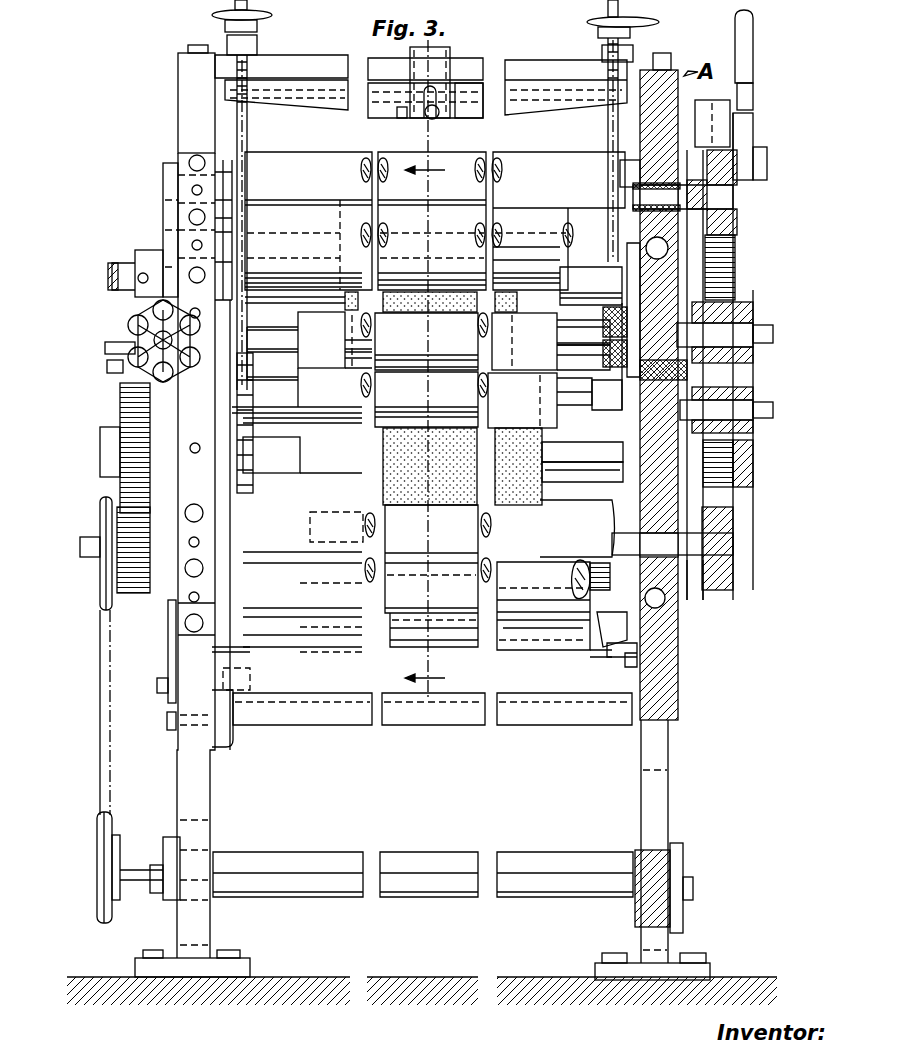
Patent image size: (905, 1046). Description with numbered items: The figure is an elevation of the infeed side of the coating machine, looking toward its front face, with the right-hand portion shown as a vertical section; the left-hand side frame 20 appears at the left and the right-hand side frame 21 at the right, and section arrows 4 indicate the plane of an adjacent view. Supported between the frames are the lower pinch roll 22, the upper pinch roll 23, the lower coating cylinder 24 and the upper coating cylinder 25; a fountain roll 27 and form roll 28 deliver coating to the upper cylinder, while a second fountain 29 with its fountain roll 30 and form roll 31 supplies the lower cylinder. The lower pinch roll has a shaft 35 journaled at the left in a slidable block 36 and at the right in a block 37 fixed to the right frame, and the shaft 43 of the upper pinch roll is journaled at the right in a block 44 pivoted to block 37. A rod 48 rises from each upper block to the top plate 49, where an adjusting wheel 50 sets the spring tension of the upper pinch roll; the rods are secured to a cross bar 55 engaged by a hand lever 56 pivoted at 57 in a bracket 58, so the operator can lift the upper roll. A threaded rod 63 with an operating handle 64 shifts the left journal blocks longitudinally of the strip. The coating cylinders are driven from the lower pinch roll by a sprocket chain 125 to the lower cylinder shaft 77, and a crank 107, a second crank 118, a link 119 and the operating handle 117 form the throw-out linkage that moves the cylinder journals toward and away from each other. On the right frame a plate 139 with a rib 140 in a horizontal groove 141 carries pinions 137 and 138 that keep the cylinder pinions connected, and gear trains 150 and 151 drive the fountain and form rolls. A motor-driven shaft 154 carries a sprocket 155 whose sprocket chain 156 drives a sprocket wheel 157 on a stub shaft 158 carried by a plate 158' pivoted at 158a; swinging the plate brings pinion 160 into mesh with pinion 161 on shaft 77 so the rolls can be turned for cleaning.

The left-hand side frame 20 is at (193, 118).
The right-hand side frame 21 is at (668, 72).
The adjusting wheel 50 is at (213, 15).
The rod 48 is at (248, 135).
The top plate 49 is at (590, 62).
The bracket 58 is at (410, 50).
The hand lever 56 is at (436, 118).
The cross bar 55 is at (470, 100).
The pivot 57 is at (397, 112).
The section line 4 is at (434, 425).
The fountain roll 27 is at (305, 215).
The upper coating cylinder 25 is at (478, 225).
The form roll 28 is at (535, 175).
The upper pinch roll 23 is at (424, 341).
The lower pinch roll 22 is at (424, 399).
The block 44 is at (615, 325).
The shaft 43 is at (612, 366).
The rib 140 is at (640, 370).
The shaft 35 is at (288, 370).
The block 36 is at (235, 423).
The sprocket chain 125 is at (240, 483).
The horizontal groove 141 is at (617, 427).
The block 37 is at (518, 466).
The lower cylinder shaft 77 is at (605, 480).
The lower coating cylinder 24 is at (410, 482).
The second fountain 29 is at (533, 652).
The fountain roll 30 is at (603, 612).
The form roll 31 is at (590, 597).
The shaft 154 is at (500, 855).
The sprocket 155 is at (100, 838).
The sprocket chain 156 is at (97, 750).
The sprocket wheel 157 is at (103, 588).
The stub shaft 158 is at (71, 566).
The pinion 160 is at (117, 520).
The pinion 161 is at (120, 430).
The plate 158' is at (107, 665).
The pivot 158a is at (157, 685).
The operating handle 64 is at (130, 315).
The rod 63 is at (107, 350).
The operating handle 117 is at (755, 40).
The second crank 118 is at (710, 113).
The link 119 is at (725, 140).
The crank 107 is at (740, 180).
The train of gears 150 is at (742, 231).
The pinion 137 is at (755, 300).
The plate 139 is at (690, 370).
The pinion 138 is at (755, 450).
The train of gears 151 is at (742, 533).